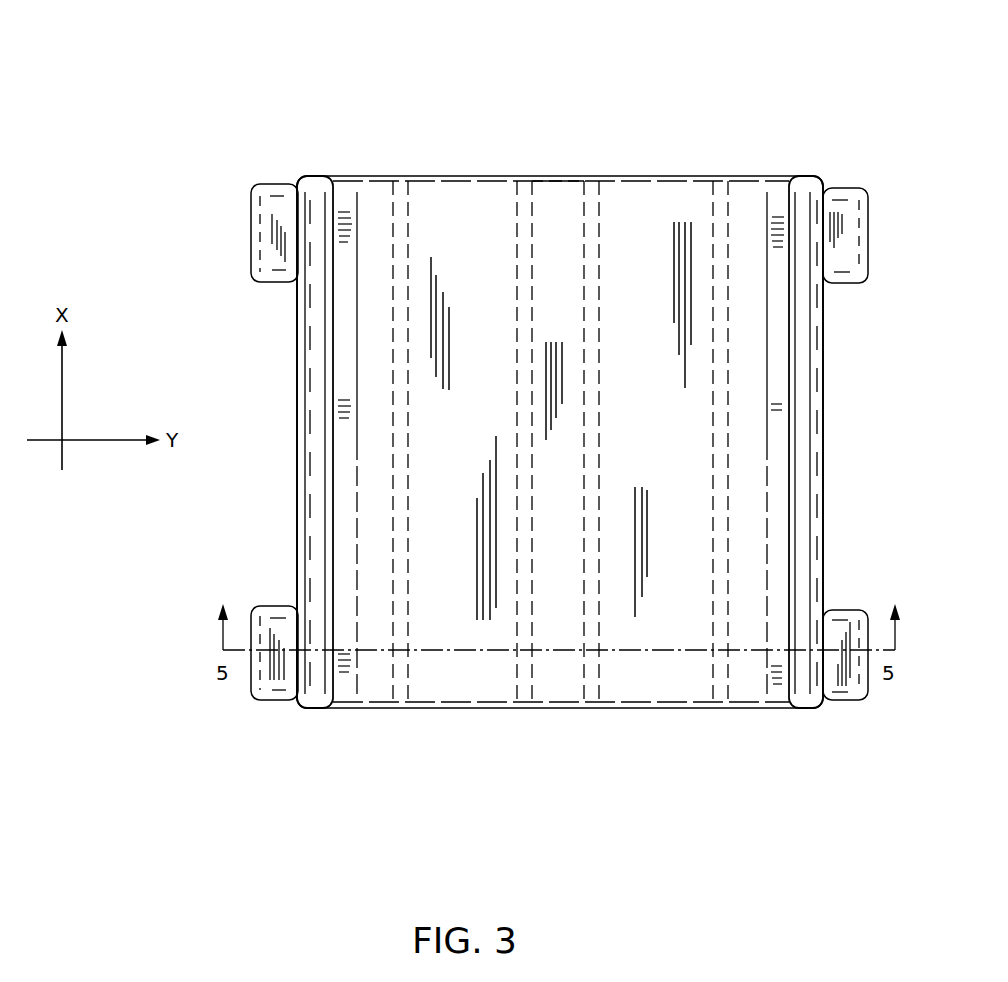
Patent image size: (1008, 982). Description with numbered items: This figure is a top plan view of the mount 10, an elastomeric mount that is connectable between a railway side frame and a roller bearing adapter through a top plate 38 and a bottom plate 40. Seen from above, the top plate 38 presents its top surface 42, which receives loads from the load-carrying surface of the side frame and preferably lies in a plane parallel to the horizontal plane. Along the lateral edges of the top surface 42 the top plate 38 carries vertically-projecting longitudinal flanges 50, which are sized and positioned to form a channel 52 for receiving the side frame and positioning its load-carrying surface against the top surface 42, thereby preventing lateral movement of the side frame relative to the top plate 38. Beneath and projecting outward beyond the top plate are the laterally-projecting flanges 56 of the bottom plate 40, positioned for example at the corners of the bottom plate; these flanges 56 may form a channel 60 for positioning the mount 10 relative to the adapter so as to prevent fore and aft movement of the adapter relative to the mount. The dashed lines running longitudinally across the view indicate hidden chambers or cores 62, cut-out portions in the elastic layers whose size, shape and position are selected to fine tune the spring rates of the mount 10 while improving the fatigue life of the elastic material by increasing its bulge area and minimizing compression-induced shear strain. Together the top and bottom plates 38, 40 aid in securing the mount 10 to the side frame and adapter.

The mount 10 is at (545, 396).
The top plate 38 is at (443, 212).
The channel 52 is at (556, 200).
The laterally-projecting flanges 56 is at (282, 247).
The channel 60 is at (255, 333).
The vertically-projecting longitudinal flanges 50 is at (320, 452).
The top surface 42 is at (648, 431).
The bottom plate 40 is at (283, 698).
The chamber or core 62 is at (391, 680).